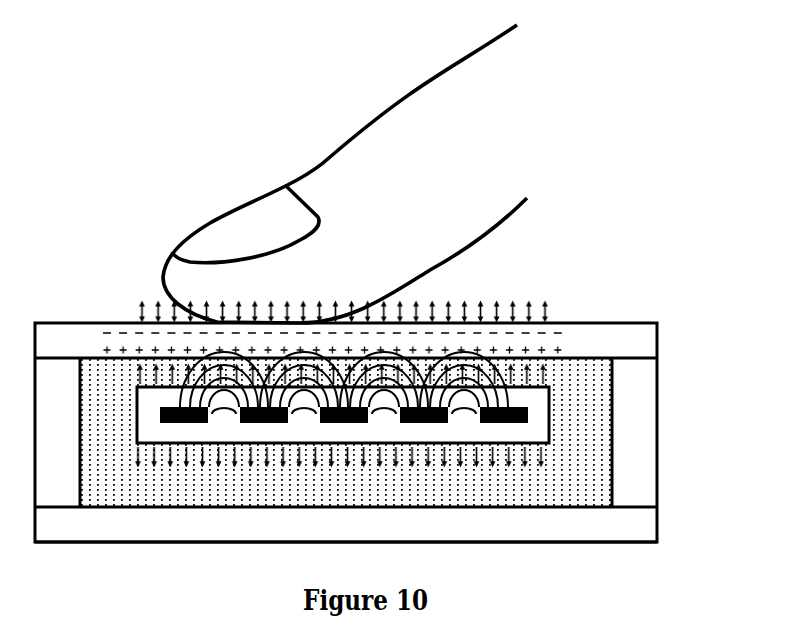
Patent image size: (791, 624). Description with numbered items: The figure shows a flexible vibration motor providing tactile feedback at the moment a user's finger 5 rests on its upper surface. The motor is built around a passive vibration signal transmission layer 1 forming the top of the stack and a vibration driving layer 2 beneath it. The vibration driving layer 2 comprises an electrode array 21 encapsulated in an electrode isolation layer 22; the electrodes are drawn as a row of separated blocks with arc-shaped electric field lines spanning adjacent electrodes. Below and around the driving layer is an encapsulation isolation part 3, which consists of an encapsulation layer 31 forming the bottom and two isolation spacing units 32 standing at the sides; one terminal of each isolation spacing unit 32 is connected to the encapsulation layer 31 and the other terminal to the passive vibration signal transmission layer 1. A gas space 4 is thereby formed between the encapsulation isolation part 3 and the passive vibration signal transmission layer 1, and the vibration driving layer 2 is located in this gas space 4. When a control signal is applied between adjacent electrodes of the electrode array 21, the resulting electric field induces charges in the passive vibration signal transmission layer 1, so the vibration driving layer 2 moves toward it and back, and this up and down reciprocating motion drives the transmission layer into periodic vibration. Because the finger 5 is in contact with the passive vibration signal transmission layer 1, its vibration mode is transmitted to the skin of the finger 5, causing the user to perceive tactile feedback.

The passive vibration signal transmission layer 1 is at (643, 342).
The vibration driving layer 2 is at (448, 397).
The electrode array 21 is at (527, 420).
The electrode isolation layer 22 is at (533, 400).
The encapsulation isolation part 3 is at (397, 450).
The encapsulation layer 31 is at (633, 523).
The isolation spacing unit 32 is at (643, 495).
The gas space 4 is at (583, 472).
The finger 5 is at (178, 302).